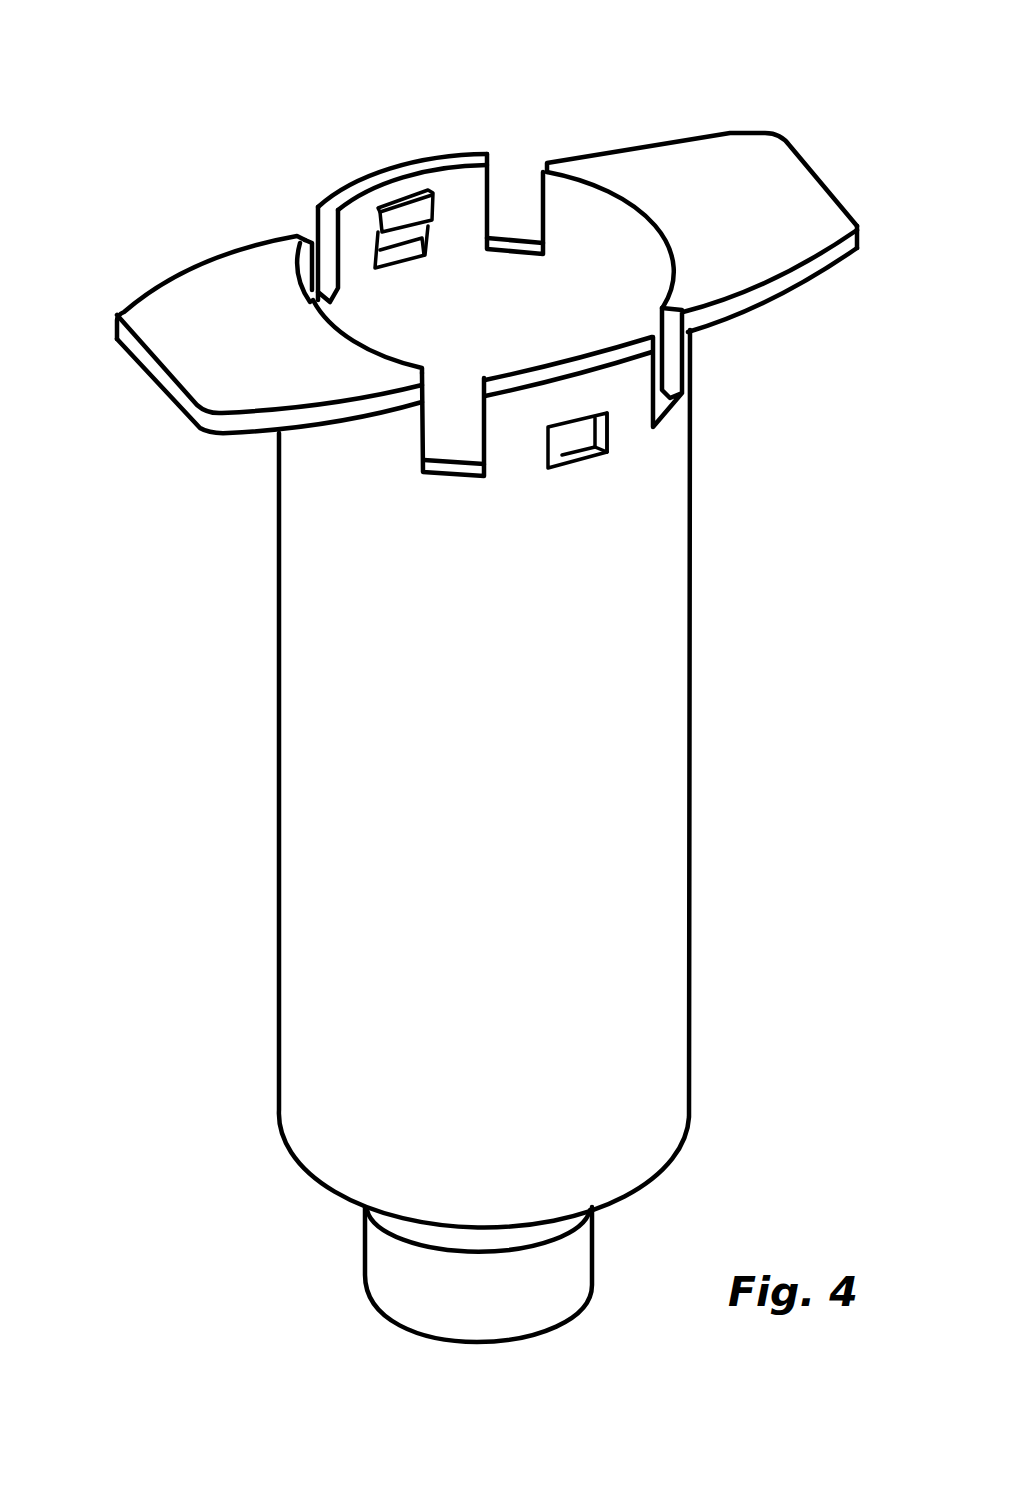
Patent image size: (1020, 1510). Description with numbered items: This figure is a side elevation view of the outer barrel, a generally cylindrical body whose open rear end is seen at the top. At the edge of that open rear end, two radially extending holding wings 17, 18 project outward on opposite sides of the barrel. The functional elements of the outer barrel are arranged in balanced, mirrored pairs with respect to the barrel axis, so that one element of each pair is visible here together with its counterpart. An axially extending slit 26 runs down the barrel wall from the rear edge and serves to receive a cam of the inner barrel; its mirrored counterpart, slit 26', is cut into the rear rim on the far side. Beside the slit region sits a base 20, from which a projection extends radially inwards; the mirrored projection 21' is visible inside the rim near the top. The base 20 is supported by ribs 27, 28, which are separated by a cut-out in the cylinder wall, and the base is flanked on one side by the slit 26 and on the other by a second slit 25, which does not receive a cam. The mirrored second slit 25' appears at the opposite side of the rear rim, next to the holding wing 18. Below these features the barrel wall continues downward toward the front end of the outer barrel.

The holding wing 17 is at (660, 170).
The holding wing 18 is at (200, 340).
The base 20 is at (570, 405).
The projection 21' is at (406, 165).
The second slit 25 is at (758, 245).
The second slit 25' is at (207, 226).
The axially extending slit 26 is at (302, 444).
The axially extending slit 26' is at (558, 130).
The rib 27 is at (623, 415).
The rib 28 is at (512, 450).